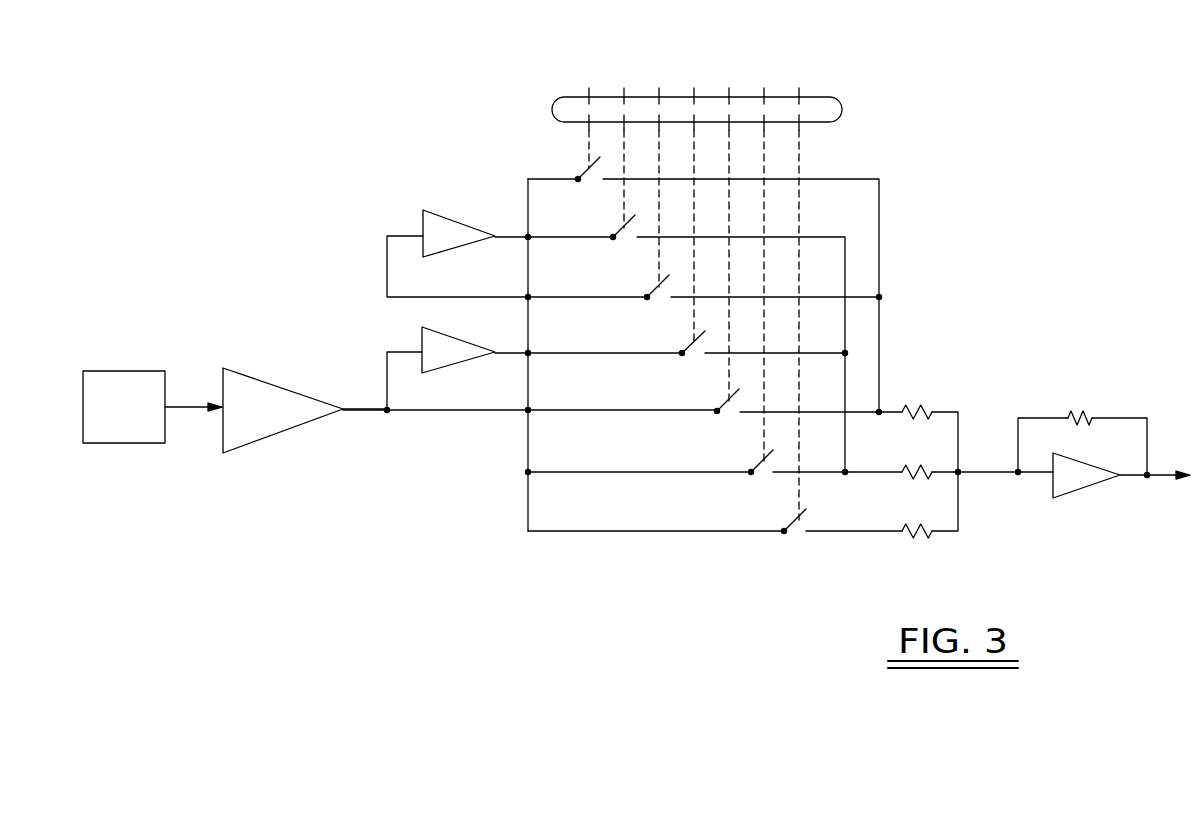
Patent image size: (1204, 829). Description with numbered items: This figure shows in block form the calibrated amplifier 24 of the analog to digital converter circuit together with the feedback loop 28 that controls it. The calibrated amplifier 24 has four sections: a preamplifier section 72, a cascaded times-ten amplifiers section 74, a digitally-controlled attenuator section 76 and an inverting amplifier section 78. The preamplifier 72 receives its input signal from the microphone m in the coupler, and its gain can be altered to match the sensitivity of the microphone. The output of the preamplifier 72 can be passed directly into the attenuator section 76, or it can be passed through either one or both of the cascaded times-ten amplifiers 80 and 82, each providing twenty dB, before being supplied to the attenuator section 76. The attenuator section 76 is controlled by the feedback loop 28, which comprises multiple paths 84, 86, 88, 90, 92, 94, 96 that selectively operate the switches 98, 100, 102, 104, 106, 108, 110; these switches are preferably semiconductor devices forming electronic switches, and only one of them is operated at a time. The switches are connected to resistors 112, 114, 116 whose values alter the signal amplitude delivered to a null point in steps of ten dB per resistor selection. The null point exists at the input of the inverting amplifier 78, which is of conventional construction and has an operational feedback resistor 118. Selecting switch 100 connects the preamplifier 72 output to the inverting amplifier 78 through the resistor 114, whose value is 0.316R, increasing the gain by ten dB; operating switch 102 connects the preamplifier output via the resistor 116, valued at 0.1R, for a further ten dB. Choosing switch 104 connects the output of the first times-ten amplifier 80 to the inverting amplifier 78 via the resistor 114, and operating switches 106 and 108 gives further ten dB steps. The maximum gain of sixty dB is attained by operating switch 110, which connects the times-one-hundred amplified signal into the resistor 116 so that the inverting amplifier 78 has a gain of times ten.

The calibrated amplifier 24 is at (238, 97).
The feedback loop 28 is at (842, 109).
The microphone m is at (103, 371).
The preamplifier 72 is at (250, 445).
The cascaded times 10 amplifiers section 74 is at (462, 592).
The digitally-controlled attenuator section 76 is at (700, 593).
The inverting amplifier 78 is at (1075, 498).
The first times 10 amplifier 80 is at (422, 341).
The second times 10 amplifier 82 is at (447, 218).
The feedback loop path 84 is at (830, 57).
The feedback loop path 86 is at (764, 92).
The feedback loop path 88 is at (729, 92).
The feedback loop path 90 is at (700, 58).
The feedback loop path 92 is at (659, 92).
The feedback loop path 94 is at (624, 92).
The feedback loop path 96 is at (589, 92).
The switch 98 is at (784, 527).
The switch 100 is at (750, 469).
The switch 102 is at (716, 409).
The switch 104 is at (682, 350).
The switch 106 is at (647, 293).
The switch 108 is at (612, 234).
The switch 110 is at (580, 173).
The resistor 112 is at (905, 537).
The resistor 114 is at (905, 478).
The resistor 116 is at (925, 414).
The feedback resistor 118 is at (1075, 417).